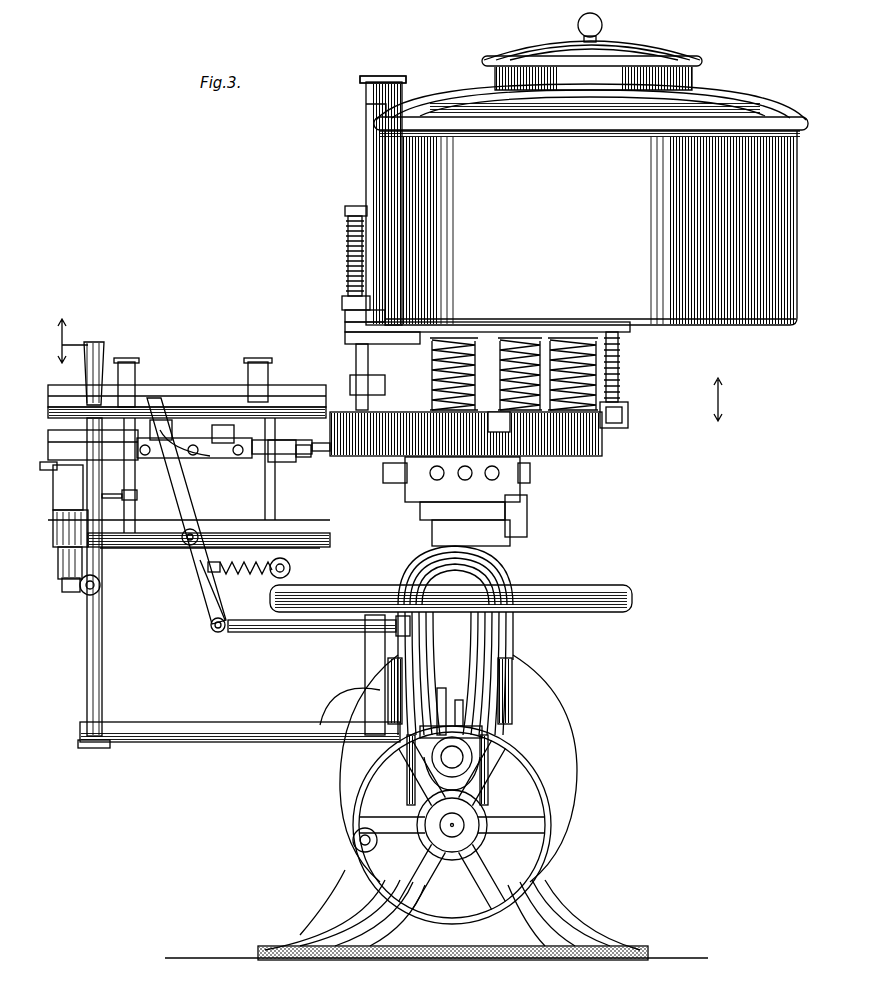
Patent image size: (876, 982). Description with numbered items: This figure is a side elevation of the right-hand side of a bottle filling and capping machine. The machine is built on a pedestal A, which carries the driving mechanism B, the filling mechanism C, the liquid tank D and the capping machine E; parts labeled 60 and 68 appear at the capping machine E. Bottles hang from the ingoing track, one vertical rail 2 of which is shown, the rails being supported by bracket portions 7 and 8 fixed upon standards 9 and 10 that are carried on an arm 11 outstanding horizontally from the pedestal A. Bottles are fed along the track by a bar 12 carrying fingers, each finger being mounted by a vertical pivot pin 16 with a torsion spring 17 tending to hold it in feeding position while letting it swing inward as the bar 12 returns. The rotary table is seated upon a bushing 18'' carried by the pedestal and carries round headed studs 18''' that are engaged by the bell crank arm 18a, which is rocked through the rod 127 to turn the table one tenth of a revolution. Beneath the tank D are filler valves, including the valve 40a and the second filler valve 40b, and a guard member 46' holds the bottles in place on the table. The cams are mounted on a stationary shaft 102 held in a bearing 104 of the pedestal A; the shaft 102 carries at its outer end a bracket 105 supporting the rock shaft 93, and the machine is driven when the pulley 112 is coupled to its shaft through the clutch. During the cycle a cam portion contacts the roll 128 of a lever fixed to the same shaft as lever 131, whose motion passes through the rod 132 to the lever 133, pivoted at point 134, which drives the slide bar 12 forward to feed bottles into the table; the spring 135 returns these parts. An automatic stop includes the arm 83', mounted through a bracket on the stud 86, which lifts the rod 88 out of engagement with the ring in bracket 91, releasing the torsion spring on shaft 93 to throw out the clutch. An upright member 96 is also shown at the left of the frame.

The liquid tank D is at (591, 204).
The capping machine E is at (366, 143).
The cap 60 is at (376, 90).
The bracket 68 is at (372, 112).
The filling mechanism C is at (494, 366).
The spring 40a is at (428, 382).
The guard member 46' is at (641, 426).
The second filler valve 40b is at (610, 446).
The bushing 18'' is at (370, 477).
The round headed stud 18''' is at (495, 479).
The bell crank lever 18a is at (528, 512).
The bracket portion 7 is at (650, 403).
The driving mechanism B is at (436, 740).
The rod 127 is at (515, 628).
The lever 131 is at (378, 698).
The bracket 105 is at (447, 700).
The pulley 112 is at (545, 826).
The stationary shaft 102 is at (460, 758).
The bearing 104 is at (570, 745).
The roll 128 is at (358, 842).
The pedestal A is at (322, 902).
The vertical rail 2 is at (62, 392).
The bracket portion 8 is at (255, 395).
The bar 12 is at (200, 412).
The arm 11 is at (158, 398).
The vertical pivot pin 16 is at (216, 456).
The torsion spring 17 is at (226, 468).
The standard 10 is at (270, 486).
The stud 86 is at (112, 494).
The standard 9 is at (137, 494).
The upright 96 is at (103, 647).
The rock shaft 93 is at (185, 742).
The bracket 91 is at (105, 568).
The rod 88 is at (105, 584).
The arm 83' is at (69, 611).
The pivot point 134 is at (186, 548).
The lever 133 is at (212, 609).
The spring 135 is at (262, 585).
The rod 132 is at (278, 632).